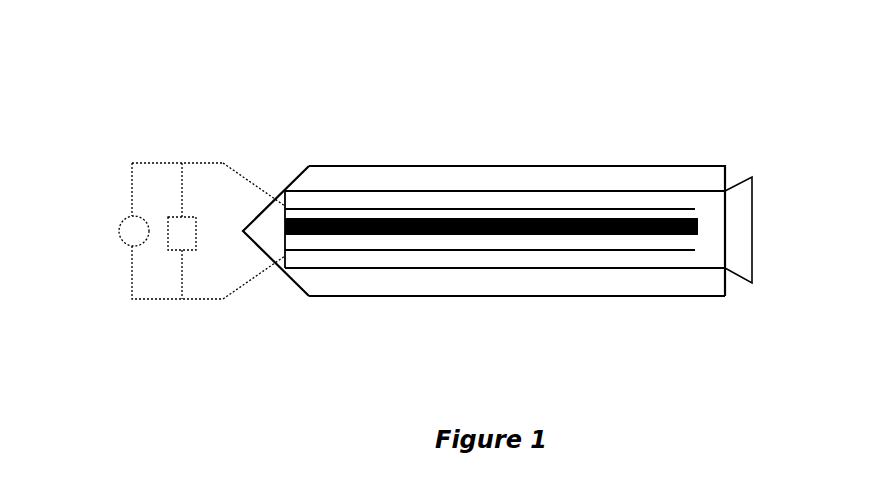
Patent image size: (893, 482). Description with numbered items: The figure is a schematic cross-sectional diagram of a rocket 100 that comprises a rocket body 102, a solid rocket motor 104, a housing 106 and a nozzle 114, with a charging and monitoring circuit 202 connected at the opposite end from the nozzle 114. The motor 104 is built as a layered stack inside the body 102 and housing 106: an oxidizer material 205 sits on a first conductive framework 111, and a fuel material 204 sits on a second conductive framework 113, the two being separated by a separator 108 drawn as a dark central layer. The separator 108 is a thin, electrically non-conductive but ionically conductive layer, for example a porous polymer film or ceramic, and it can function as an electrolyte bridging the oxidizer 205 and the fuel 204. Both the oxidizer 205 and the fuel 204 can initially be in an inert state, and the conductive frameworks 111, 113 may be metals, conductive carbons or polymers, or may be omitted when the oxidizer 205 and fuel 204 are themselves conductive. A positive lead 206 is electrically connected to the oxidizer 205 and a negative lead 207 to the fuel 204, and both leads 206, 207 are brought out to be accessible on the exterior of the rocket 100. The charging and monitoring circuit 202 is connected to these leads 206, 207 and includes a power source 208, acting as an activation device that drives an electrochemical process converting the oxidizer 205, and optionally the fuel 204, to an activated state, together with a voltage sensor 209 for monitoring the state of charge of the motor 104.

The rocket 100 is at (546, 216).
The rocket body 102 is at (585, 296).
The solid rocket motor 104 is at (638, 191).
The housing 106 is at (348, 166).
The separator 108 is at (407, 235).
The first conductive framework 111 is at (512, 208).
The second conductive framework 113 is at (513, 250).
The nozzle 114 is at (752, 231).
The charging and monitoring circuit 202 is at (177, 214).
The fuel material 204 is at (468, 260).
The oxidizer material 205 is at (427, 199).
The positive lead 206 is at (255, 180).
The negative lead 207 is at (249, 284).
The power source 208 is at (168, 245).
The voltage sensor 209 is at (119, 231).